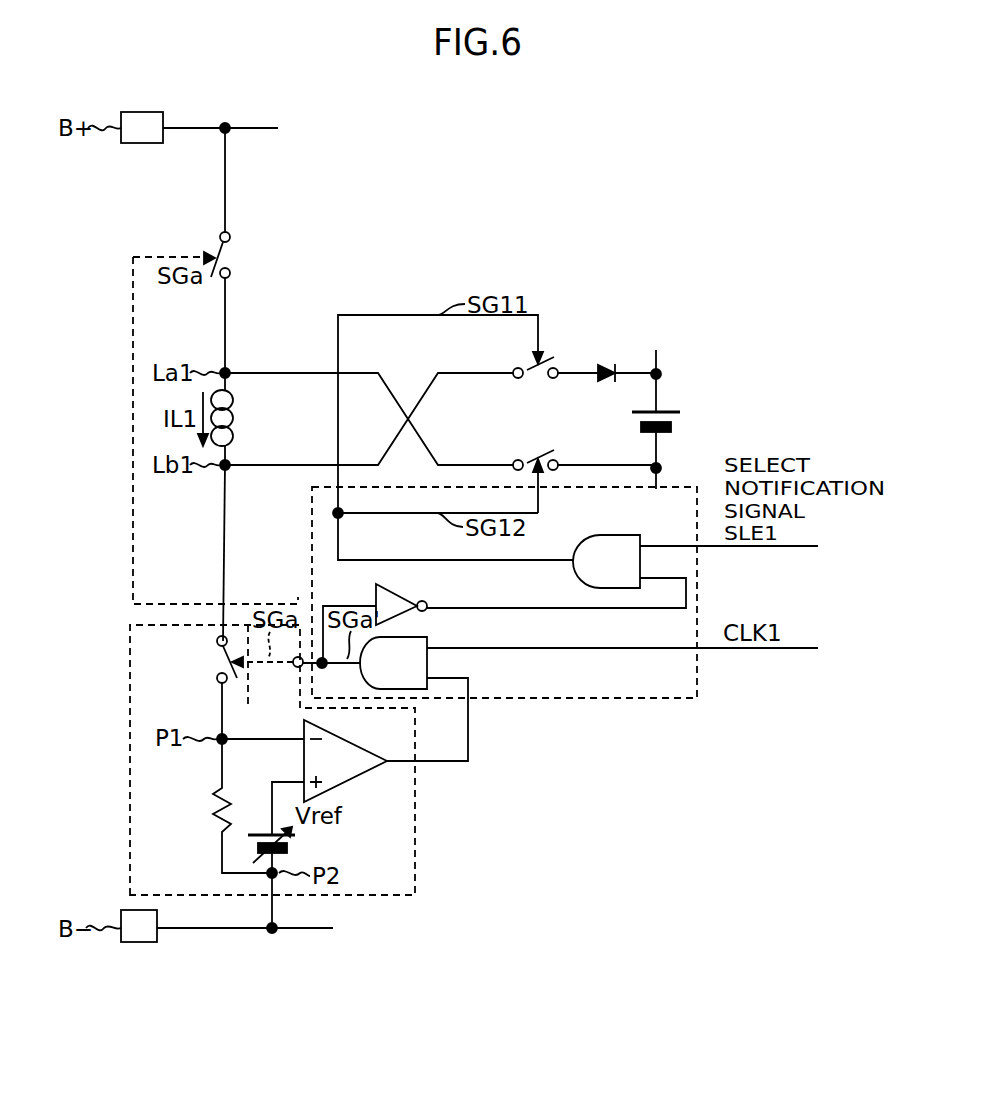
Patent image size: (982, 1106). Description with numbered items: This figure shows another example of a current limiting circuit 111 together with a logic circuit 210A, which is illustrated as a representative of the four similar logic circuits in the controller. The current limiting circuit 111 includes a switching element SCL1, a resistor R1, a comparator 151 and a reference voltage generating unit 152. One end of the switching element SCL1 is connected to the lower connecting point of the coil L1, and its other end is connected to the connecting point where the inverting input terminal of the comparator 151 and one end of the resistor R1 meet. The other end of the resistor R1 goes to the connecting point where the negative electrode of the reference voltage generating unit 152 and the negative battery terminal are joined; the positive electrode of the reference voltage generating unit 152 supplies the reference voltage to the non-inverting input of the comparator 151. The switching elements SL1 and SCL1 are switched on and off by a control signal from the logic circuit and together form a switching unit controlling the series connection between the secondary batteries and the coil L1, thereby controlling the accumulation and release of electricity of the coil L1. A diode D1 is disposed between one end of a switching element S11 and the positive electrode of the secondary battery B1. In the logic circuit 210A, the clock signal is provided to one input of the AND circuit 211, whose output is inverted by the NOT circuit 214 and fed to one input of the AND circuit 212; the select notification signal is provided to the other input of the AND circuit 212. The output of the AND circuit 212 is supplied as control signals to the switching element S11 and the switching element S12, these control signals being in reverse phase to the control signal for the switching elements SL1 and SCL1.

The current limiting circuit 111 is at (416, 838).
The comparator 151 is at (353, 735).
The reference voltage generating unit 152 is at (289, 848).
The logic circuit 210A is at (698, 590).
The AND circuit 211 is at (405, 637).
The AND circuit 212 is at (612, 535).
The NOT circuit 214 is at (397, 593).
The coil L1 is at (234, 418).
The resistor R1 is at (227, 806).
The secondary battery B1 is at (674, 419).
The diode D1 is at (601, 365).
The switching element S11 is at (531, 378).
The switching element S12 is at (548, 455).
The switching element SL1 is at (220, 245).
The switching element SCL1 is at (226, 662).